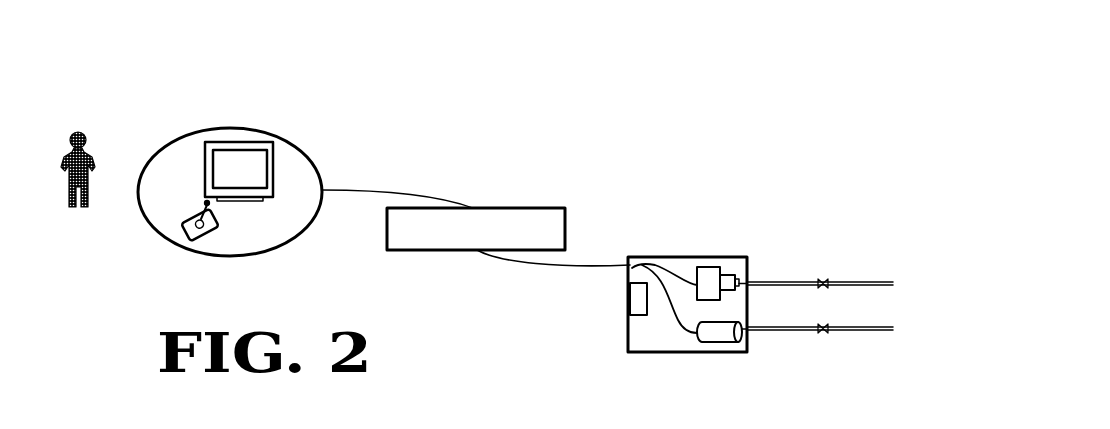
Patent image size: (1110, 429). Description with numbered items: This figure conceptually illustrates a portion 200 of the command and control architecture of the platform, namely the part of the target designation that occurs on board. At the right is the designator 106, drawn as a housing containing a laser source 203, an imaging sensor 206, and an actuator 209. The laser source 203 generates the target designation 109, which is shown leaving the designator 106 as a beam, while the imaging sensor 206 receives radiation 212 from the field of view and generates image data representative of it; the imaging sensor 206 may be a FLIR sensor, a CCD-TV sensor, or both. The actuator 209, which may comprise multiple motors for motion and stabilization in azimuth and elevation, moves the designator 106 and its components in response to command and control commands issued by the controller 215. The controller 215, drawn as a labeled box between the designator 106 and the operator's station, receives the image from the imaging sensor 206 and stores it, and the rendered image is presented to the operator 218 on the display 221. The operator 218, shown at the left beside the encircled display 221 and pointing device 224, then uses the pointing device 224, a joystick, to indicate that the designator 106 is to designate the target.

The portion of the command and control architecture 200 is at (420, 152).
The operator 218 is at (90, 167).
The display 221 is at (273, 141).
The pointing device 224 is at (197, 237).
The controller 215 is at (565, 207).
The designator 106 is at (682, 257).
The imaging sensor 206 is at (725, 268).
The actuator 209 is at (629, 296).
The laser source 203 is at (713, 342).
The radiation 212 is at (838, 282).
The target designation 109 is at (788, 330).